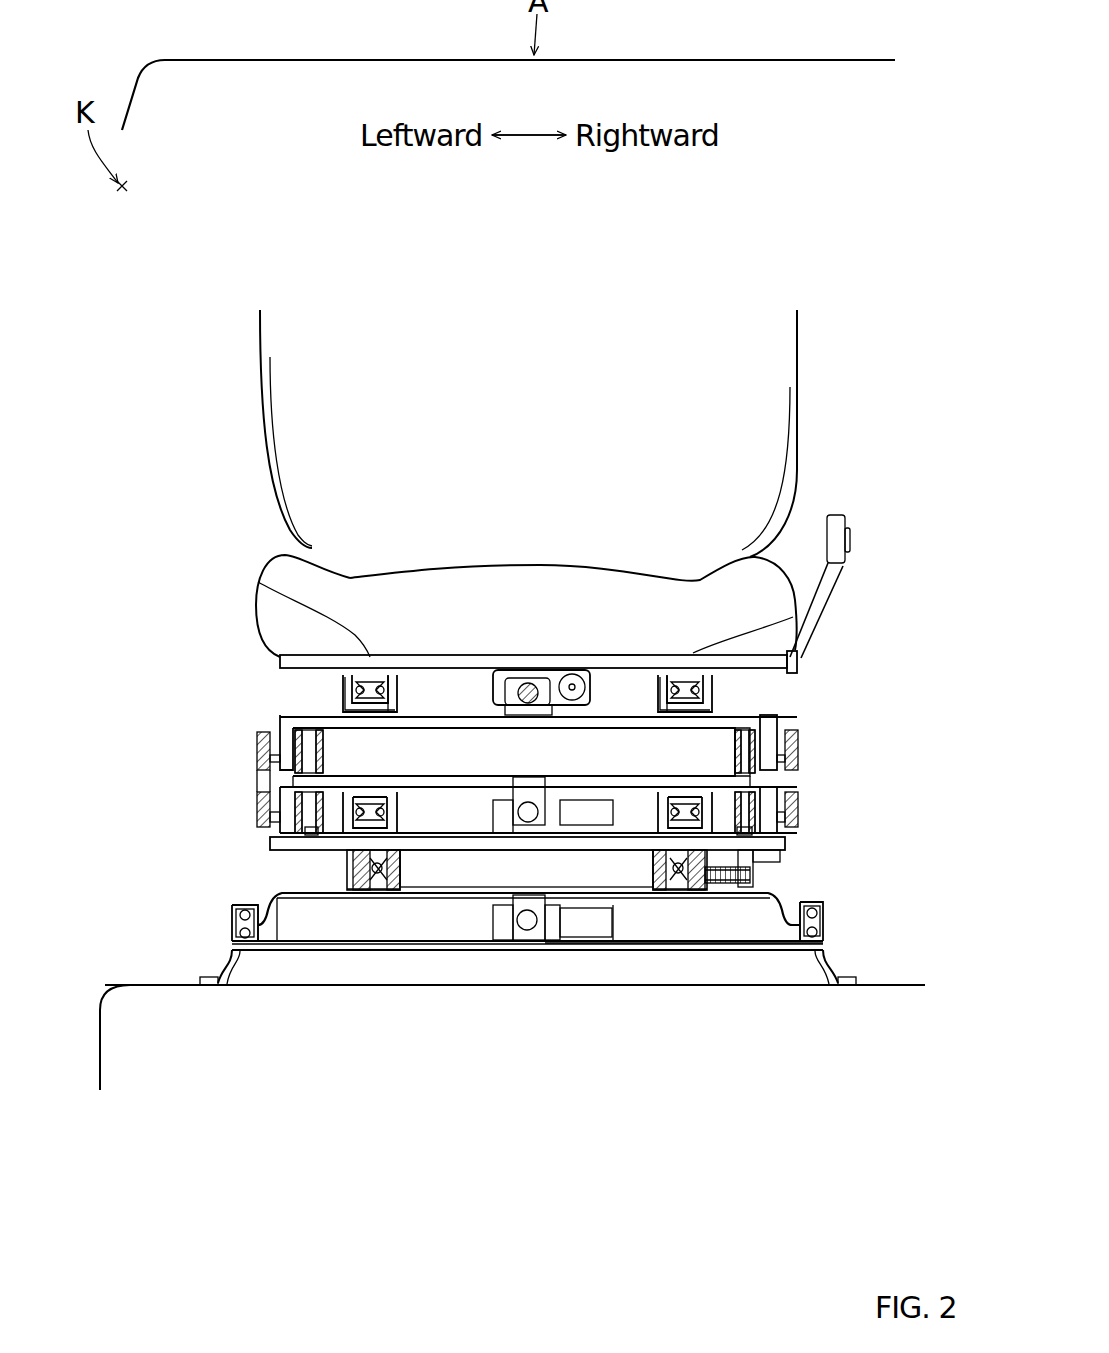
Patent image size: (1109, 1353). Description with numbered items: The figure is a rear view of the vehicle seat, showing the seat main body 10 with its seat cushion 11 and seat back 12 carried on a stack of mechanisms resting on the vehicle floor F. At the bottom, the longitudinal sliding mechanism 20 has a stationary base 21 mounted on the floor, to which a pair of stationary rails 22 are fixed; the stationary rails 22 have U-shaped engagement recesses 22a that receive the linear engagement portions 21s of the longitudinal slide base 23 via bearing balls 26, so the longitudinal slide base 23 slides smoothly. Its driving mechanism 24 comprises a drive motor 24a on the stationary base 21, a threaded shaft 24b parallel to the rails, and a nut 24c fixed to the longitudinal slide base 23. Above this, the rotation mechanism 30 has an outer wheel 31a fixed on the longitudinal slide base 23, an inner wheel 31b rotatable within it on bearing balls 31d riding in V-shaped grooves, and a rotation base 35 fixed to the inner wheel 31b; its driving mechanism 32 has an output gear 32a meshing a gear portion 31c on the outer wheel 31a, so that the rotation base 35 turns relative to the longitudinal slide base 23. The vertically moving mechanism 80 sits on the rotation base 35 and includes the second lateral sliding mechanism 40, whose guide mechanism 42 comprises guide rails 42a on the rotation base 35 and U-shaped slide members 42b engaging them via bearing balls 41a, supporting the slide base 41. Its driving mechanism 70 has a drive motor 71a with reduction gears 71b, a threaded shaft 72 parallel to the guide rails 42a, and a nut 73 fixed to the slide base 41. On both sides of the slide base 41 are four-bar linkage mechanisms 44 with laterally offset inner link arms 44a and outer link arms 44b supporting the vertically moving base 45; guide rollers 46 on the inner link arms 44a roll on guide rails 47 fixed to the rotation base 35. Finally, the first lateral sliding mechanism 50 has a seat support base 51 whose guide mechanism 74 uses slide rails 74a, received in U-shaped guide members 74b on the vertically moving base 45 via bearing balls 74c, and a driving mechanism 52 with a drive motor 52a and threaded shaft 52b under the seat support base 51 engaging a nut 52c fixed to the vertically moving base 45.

The seat main body 10 is at (804, 393).
The seat cushion 11 is at (278, 598).
The seat back 12 is at (733, 357).
The longitudinal sliding mechanism 20 is at (224, 944).
The stationary base 21 is at (788, 951).
The engagement portions 21s is at (252, 952).
The stationary rails 22 is at (228, 940).
The engagement recesses 22a is at (223, 980).
The longitudinal slide base 23 is at (345, 915).
The driving mechanism 24 is at (494, 960).
The drive motor 24a is at (578, 945).
The threaded shaft 24b is at (530, 942).
The nut 24c is at (486, 950).
The bearing balls 26 is at (247, 942).
The rotation mechanism 30 is at (272, 893).
The outer wheel 31a is at (300, 918).
The inner wheel 31b is at (380, 893).
The gear portion 31c is at (735, 896).
The bearing balls 31d is at (293, 903).
The driving mechanism 32 is at (782, 857).
The output gear 32a is at (752, 876).
The rotation base 35 is at (640, 920).
The second lateral sliding mechanism 40 is at (625, 801).
The slide base 41 is at (463, 786).
The bearing balls 41a is at (377, 826).
The guide mechanism 42 is at (400, 804).
The guide rails 42a is at (381, 892).
The slide members 42b is at (345, 865).
The four-bar linkage mechanisms 44 is at (248, 754).
The inner link arm 44a is at (327, 753).
The outer link arm 44b is at (247, 754).
The vertically moving base 45 is at (440, 717).
The guide rollers 46 is at (297, 822).
The guide rails 47 is at (280, 845).
The first lateral sliding mechanism 50 is at (338, 688).
The seat support base 51 is at (627, 655).
The driving mechanism 52 is at (488, 670).
The drive motor 52a is at (560, 668).
The threaded shaft 52b is at (528, 682).
The nut 52c is at (572, 674).
The driving mechanism 70 is at (577, 797).
The drive motor 71a is at (645, 850).
The reduction gears 71b is at (565, 850).
The threaded shaft 72 is at (594, 938).
The nut 73 is at (495, 908).
The guide mechanism 74 is at (367, 676).
The slide rails 74a is at (345, 698).
The guide members 74b is at (340, 702).
The bearing balls 74c is at (390, 674).
The vertically moving mechanism 80 is at (250, 791).
The vehicle floor F is at (905, 985).